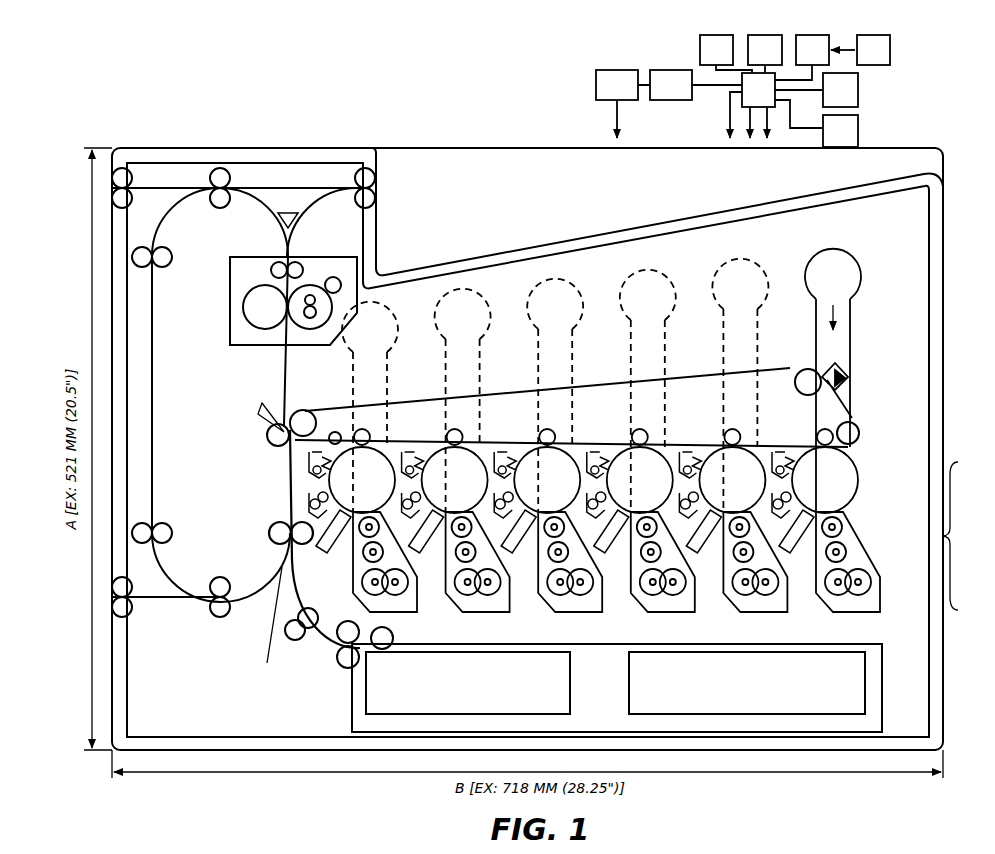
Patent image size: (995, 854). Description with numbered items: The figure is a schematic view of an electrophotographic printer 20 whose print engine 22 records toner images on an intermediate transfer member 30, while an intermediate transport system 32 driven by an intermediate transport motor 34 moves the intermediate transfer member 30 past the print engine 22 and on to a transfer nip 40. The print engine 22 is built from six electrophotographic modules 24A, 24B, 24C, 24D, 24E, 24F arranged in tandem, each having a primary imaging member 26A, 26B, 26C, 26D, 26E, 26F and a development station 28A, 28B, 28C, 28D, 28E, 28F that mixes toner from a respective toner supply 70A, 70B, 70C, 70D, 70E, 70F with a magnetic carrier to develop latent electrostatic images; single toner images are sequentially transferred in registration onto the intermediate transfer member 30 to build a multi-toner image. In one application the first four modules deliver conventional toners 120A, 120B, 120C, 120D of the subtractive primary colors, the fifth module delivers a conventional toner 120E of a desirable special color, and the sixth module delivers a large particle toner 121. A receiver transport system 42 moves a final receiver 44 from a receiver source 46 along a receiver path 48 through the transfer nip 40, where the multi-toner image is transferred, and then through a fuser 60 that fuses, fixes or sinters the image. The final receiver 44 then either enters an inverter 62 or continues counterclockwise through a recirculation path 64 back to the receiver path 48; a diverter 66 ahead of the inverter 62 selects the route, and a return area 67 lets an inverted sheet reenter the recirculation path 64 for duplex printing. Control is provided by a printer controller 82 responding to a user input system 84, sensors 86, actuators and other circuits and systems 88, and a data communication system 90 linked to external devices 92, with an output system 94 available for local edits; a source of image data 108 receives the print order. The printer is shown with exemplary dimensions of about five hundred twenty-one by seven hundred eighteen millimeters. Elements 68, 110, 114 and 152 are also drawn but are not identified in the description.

The electrophotographic printer 20 is at (62, 140).
The print engine 22 is at (965, 536).
The electrophotographic module 24A is at (825, 480).
The electrophotographic module 24B is at (732, 480).
The electrophotographic module 24C is at (640, 480).
The electrophotographic module 24D is at (547, 480).
The fifth electrophotographic module 24E is at (455, 480).
The sixth electrophotographic module 24F is at (349, 491).
The primary imaging member 26A is at (866, 438).
The primary imaging member 26B is at (767, 436).
The primary imaging member 26C is at (675, 436).
The primary imaging member 26D is at (583, 436).
The primary imaging member 26E is at (490, 436).
The primary imaging member 26F is at (392, 455).
The development station 28A is at (864, 575).
The development station 28B is at (771, 575).
The development station 28C is at (679, 575).
The development station 28D is at (586, 575).
The development station 28E is at (493, 575).
The development station 28F is at (417, 603).
The intermediate transfer member 30 is at (783, 367).
The intermediate transport system 32 is at (866, 396).
The intermediate transport motor 34 is at (301, 412).
The transfer nip 40 is at (288, 450).
The receiver transport system 42 is at (182, 610).
The final receiver 44 is at (290, 563).
The receiver source 46 is at (459, 710).
The receiver path 48 is at (337, 650).
The fuser 60 is at (246, 344).
The inverter 62 is at (348, 227).
The recirculation path 64 is at (170, 205).
The diverter 66 is at (291, 205).
The return area 67 is at (281, 180).
The exit rollers 68 is at (373, 190).
The toner supply 70A is at (857, 373).
The toner supply 70B is at (764, 378).
The toner supply 70C is at (672, 383).
The toner supply 70D is at (580, 388).
The toner supply 70E is at (487, 393).
The toner supply 70F is at (424, 306).
The printer controller 82 is at (748, 99).
The user input system 84 is at (830, 99).
The sensors 86 is at (706, 59).
The actuators and other circuits and systems 88 is at (755, 59).
The data communication system 90 is at (802, 59).
The external devices 92 is at (863, 59).
The output system 94 is at (830, 140).
The source of image data 108 is at (780, 91).
The raster image processor 110 is at (658, 94).
The color management system 114 is at (604, 94).
The conventional toner 120A is at (833, 274).
The conventional toner 120B is at (740, 284).
The conventional toner 120C is at (648, 295).
The conventional toner 120D is at (555, 304).
The conventional toner 120E is at (463, 314).
The large particle toner 121 is at (358, 339).
The fuser roller 152 is at (278, 245).